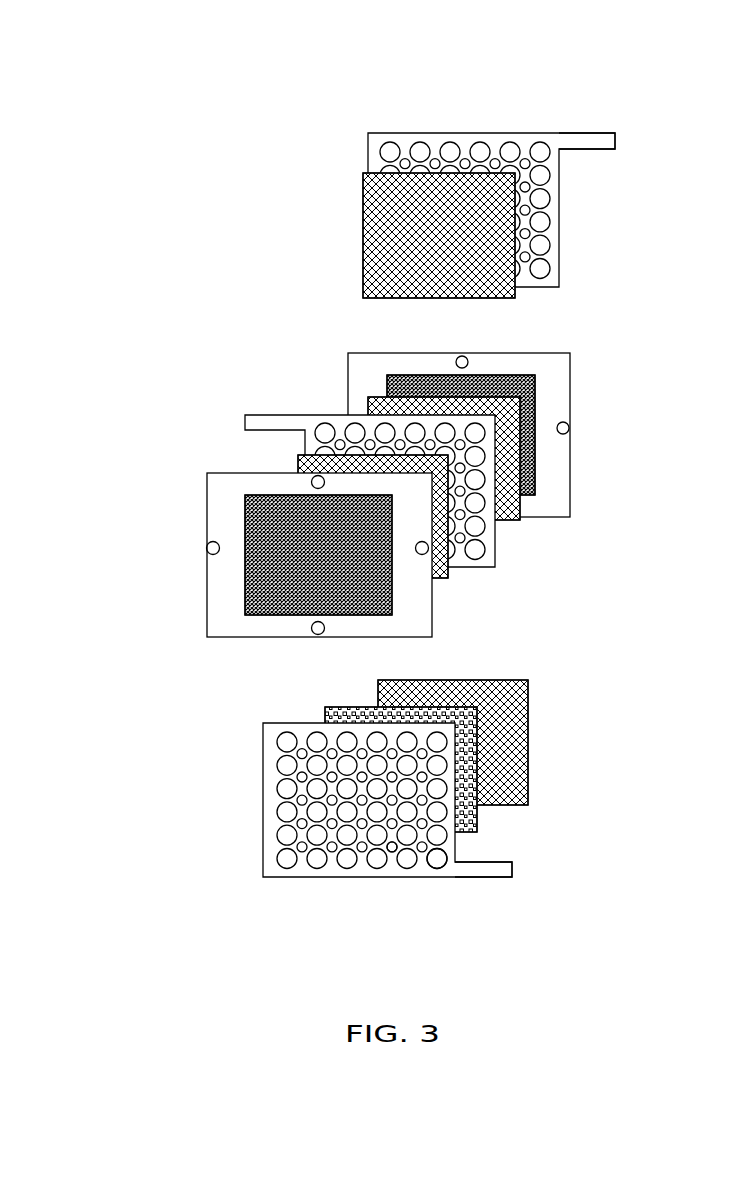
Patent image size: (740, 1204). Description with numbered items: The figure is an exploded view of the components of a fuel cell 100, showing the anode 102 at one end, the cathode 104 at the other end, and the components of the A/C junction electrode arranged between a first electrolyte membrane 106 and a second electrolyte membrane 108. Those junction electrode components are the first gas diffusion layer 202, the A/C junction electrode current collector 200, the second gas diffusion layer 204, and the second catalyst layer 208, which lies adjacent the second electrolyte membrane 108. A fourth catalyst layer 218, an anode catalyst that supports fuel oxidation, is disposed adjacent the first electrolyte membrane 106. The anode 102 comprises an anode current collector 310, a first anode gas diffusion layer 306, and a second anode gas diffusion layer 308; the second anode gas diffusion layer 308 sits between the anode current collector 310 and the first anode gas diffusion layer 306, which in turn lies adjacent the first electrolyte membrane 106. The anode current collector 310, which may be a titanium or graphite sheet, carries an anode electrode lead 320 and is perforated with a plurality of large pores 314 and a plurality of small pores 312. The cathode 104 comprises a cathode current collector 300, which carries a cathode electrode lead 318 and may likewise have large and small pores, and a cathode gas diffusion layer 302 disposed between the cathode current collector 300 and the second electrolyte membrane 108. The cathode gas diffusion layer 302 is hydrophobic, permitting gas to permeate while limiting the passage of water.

The fuel cell 100 is at (142, 62).
The anode 102 is at (245, 683).
The cathode 104 is at (313, 131).
The first electrolyte membrane 106 is at (410, 573).
The second electrolyte membrane 108 is at (547, 375).
The A/C junction electrode current collector 200 is at (535, 478).
The first gas diffusion layer 202 is at (458, 538).
The second gas diffusion layer 204 is at (533, 442).
The second catalyst layer 208 is at (537, 395).
The fourth catalyst layer 218 is at (392, 605).
The cathode current collector 300 is at (578, 149).
The cathode gas diffusion layer 302 is at (533, 225).
The first anode gas diffusion layer 306 is at (512, 710).
The second anode gas diffusion layer 308 is at (471, 740).
The anode current collector 310 is at (513, 870).
The small pores 312 is at (393, 858).
The large pores 314 is at (451, 866).
The cathode electrode lead 318 is at (611, 132).
The anode electrode lead 320 is at (493, 878).